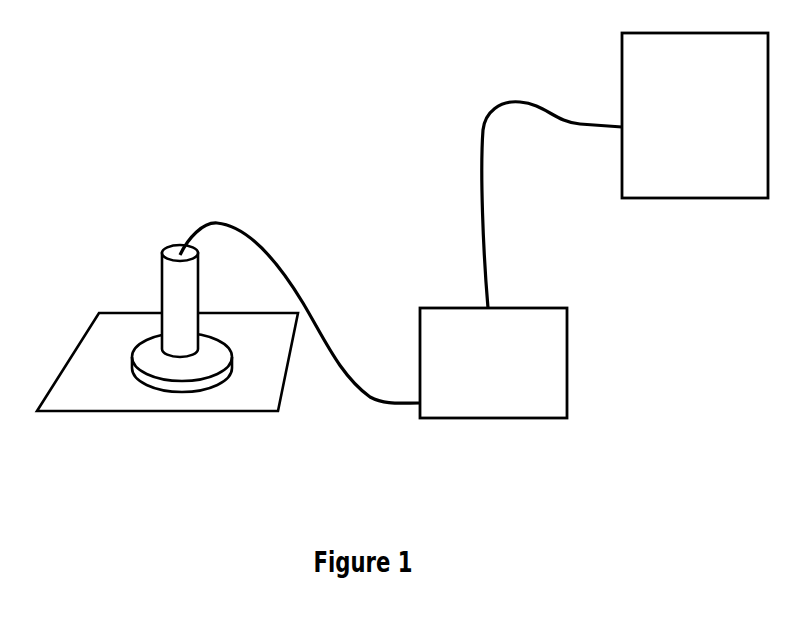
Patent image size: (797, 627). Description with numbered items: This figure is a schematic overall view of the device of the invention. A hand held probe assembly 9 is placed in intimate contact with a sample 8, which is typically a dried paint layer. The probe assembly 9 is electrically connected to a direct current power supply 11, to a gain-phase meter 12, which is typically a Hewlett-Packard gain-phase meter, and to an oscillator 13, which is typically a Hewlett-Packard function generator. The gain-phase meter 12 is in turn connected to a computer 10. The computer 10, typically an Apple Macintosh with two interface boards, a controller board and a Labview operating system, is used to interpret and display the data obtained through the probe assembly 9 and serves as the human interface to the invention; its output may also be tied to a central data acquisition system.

The sample 8 is at (227, 412).
The hand held probe assembly 9 is at (138, 275).
The computer 10 is at (599, 74).
The direct current power supply 11 is at (586, 305).
The gain-phase meter 12 is at (442, 324).
The oscillator 13 is at (552, 378).